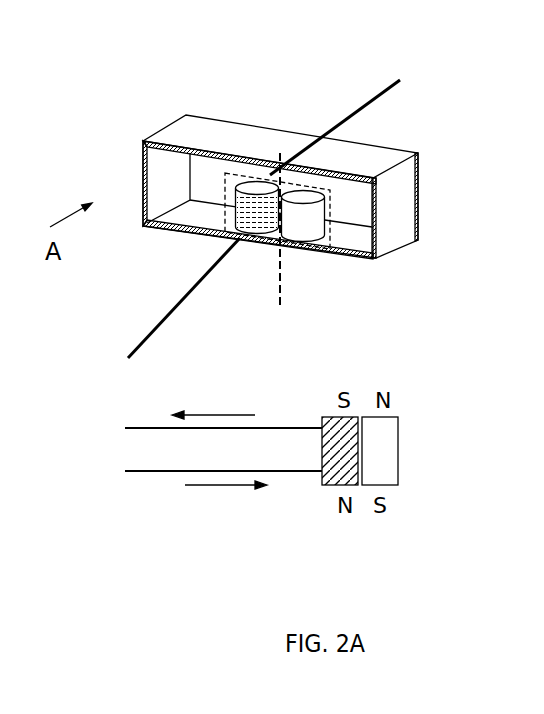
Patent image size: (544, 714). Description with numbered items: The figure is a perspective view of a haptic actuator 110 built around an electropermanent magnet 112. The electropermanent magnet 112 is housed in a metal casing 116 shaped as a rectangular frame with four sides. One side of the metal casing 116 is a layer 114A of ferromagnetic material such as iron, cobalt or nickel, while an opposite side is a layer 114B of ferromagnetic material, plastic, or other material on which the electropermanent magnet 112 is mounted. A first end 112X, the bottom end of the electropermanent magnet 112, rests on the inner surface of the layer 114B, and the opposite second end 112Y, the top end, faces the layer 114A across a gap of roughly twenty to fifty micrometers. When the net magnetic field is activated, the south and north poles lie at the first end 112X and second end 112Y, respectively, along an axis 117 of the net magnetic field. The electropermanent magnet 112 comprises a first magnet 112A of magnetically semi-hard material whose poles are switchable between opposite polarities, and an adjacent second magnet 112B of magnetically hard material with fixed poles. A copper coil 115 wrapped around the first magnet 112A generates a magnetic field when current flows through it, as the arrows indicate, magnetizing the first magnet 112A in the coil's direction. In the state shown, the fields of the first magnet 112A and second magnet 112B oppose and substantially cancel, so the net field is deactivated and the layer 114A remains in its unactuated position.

The haptic actuator 110 is at (110, 140).
The electropermanent magnet 112 is at (338, 275).
The first magnet 112A is at (248, 228).
The second magnet 112B is at (305, 223).
The first end 112X is at (128, 358).
The second end 112Y is at (400, 80).
The layer of ferromagnetic material 114A is at (283, 150).
The layer 114B is at (345, 242).
The copper coil 115 is at (226, 234).
The metal casing 116 is at (410, 212).
The axis 117 is at (280, 286).